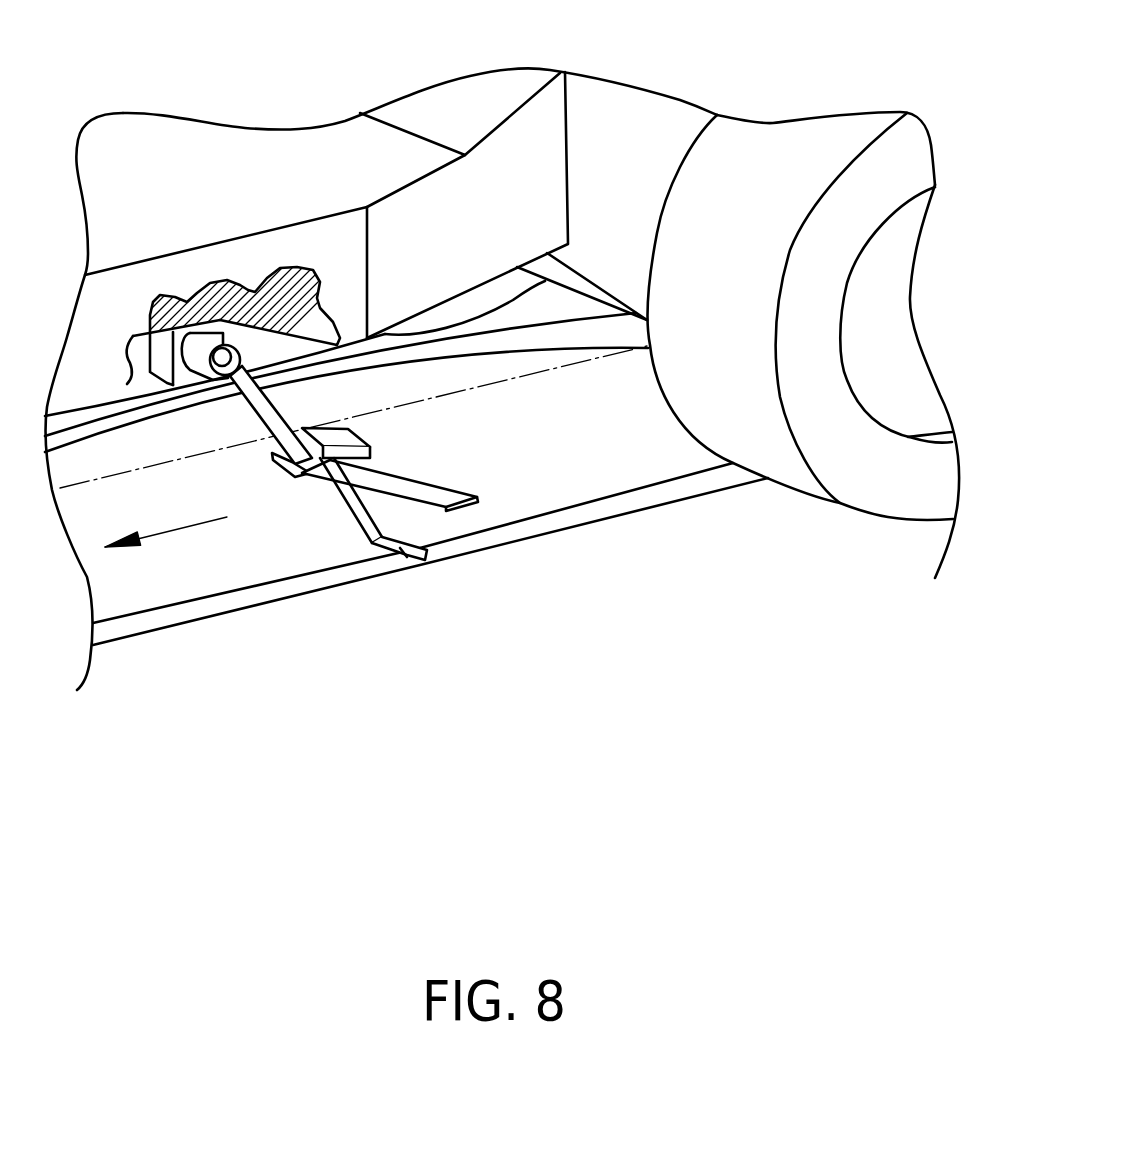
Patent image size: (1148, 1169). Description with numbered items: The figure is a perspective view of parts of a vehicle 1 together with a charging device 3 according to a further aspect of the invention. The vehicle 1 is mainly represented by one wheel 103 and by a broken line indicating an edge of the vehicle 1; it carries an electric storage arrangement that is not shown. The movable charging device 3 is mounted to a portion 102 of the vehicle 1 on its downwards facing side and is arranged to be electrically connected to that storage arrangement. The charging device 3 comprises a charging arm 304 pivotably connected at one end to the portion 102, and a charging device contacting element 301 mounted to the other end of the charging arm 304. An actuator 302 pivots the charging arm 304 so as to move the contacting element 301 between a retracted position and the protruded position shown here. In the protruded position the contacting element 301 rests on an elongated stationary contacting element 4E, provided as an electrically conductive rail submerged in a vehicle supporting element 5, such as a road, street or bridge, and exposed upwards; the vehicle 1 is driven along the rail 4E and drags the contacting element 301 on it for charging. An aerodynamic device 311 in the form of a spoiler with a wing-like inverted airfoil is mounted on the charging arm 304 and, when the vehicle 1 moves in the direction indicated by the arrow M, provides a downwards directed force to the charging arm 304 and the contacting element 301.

The vehicle 1 is at (615, 355).
The portion of the vehicle 102 is at (178, 342).
The wheel 103 is at (767, 168).
The charging device 3 is at (428, 550).
The charging device contacting element 301 is at (405, 548).
The actuator 302 is at (227, 355).
The charging arm 304 is at (256, 478).
The aerodynamic device 311 is at (217, 424).
The stationary contacting element 4E is at (630, 500).
The vehicle supporting element 5 is at (597, 440).
The arrow indicating direction of vehicle movement M is at (183, 528).